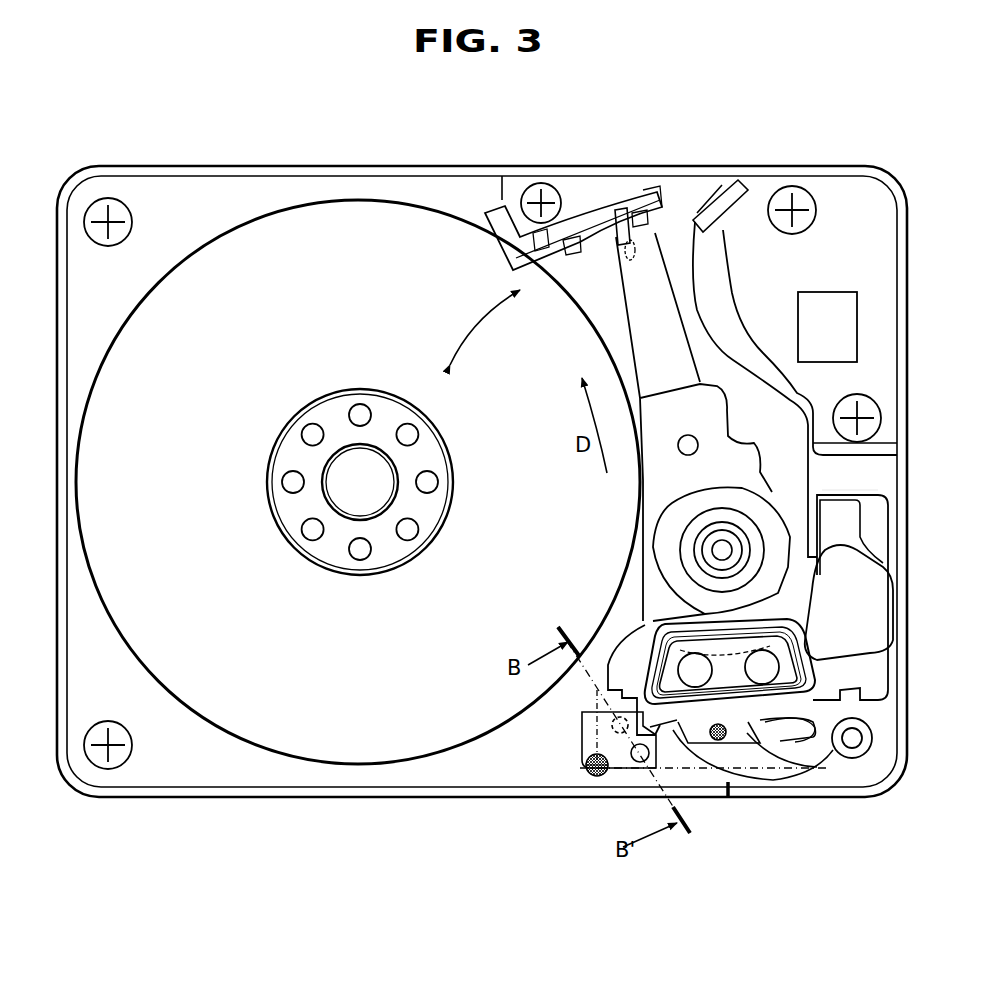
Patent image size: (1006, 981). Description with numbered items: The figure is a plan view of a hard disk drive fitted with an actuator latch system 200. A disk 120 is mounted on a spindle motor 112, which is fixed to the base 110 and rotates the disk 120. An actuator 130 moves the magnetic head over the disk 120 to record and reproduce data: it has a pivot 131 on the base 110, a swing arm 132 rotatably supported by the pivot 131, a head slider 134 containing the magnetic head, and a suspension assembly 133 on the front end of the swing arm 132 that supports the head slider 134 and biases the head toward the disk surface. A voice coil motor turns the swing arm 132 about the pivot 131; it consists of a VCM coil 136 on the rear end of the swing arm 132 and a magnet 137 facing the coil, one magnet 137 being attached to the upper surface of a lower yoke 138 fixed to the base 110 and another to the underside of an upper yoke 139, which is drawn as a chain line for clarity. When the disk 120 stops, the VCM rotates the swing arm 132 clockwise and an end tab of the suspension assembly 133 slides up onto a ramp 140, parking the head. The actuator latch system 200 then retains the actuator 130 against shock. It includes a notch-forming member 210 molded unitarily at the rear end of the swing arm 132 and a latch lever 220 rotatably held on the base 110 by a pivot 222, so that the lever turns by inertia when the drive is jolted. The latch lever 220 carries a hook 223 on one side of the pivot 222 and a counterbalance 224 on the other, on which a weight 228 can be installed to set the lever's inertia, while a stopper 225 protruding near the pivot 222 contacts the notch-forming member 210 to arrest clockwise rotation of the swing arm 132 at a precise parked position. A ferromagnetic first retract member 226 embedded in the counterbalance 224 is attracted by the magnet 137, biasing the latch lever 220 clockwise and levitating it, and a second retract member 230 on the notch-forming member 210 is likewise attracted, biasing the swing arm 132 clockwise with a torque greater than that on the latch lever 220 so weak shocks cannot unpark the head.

The base 110 is at (463, 778).
The spindle motor 112 is at (290, 455).
The disk 120 is at (328, 220).
The actuator 130 is at (787, 502).
The pivot 131 is at (722, 550).
The swing arm 132 is at (660, 467).
The suspension assembly 133 is at (635, 285).
The head slider 134 is at (640, 205).
The VCM coil 136 is at (820, 667).
The magnet 137 is at (867, 597).
The lower yoke 138 is at (852, 528).
The upper yoke 139 is at (818, 490).
The ramp 140 is at (585, 213).
The actuator latch system 200 is at (877, 850).
The notch-forming member 210 is at (780, 760).
The latch lever 220 is at (723, 743).
The pivot 222 is at (637, 762).
The hook 223 is at (797, 727).
The counterbalance 224 is at (590, 742).
The stopper 225 is at (683, 735).
The first retract member 226 is at (613, 727).
The weight 228 is at (597, 768).
The second retract member 230 is at (752, 743).